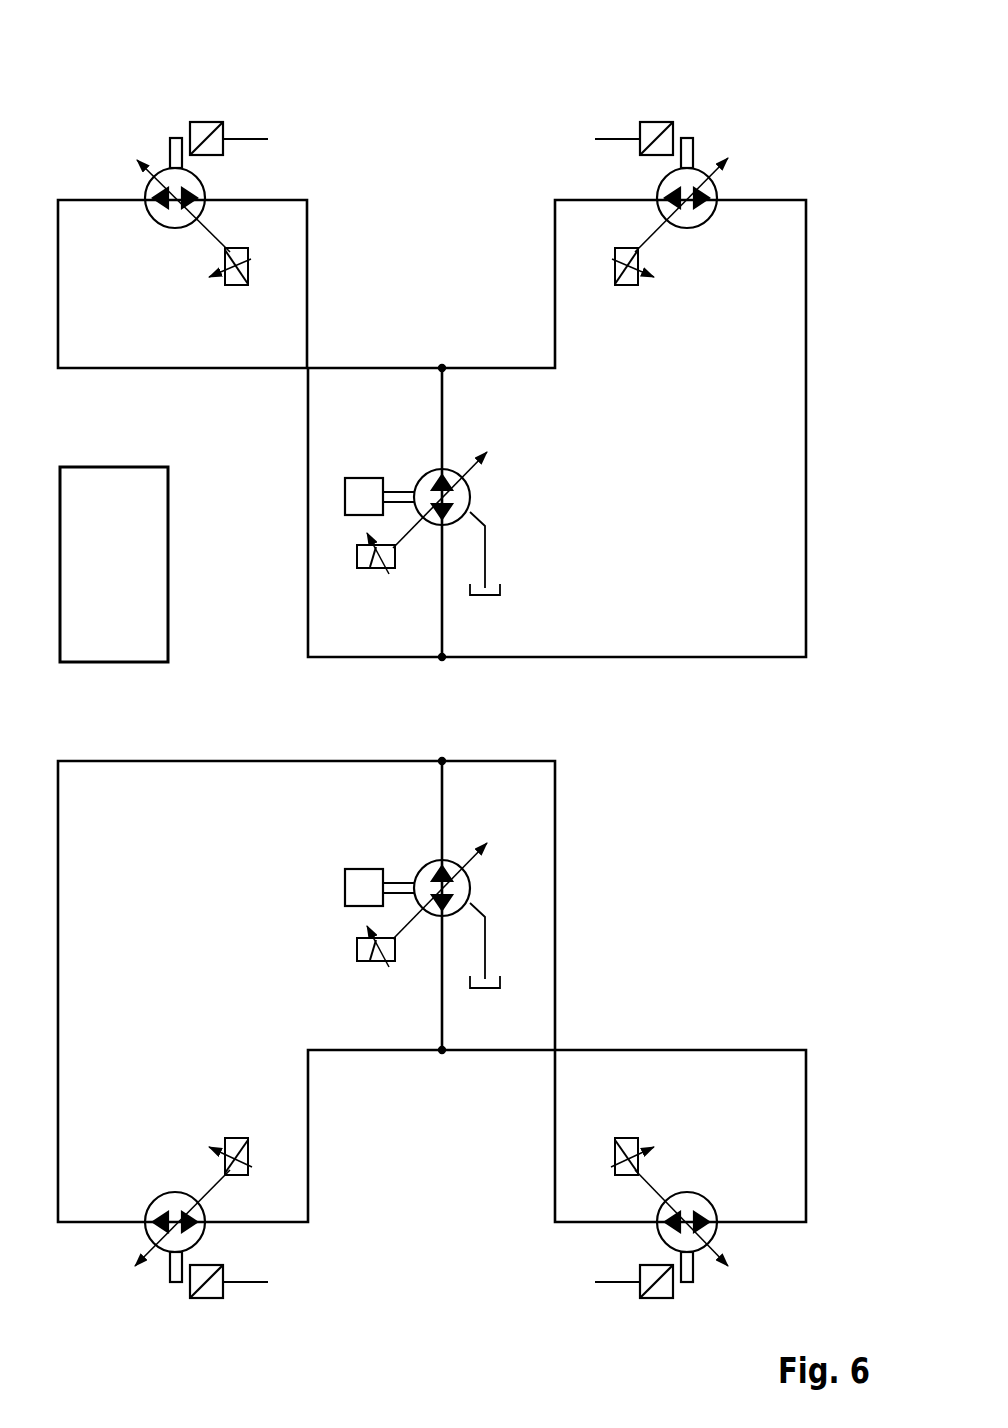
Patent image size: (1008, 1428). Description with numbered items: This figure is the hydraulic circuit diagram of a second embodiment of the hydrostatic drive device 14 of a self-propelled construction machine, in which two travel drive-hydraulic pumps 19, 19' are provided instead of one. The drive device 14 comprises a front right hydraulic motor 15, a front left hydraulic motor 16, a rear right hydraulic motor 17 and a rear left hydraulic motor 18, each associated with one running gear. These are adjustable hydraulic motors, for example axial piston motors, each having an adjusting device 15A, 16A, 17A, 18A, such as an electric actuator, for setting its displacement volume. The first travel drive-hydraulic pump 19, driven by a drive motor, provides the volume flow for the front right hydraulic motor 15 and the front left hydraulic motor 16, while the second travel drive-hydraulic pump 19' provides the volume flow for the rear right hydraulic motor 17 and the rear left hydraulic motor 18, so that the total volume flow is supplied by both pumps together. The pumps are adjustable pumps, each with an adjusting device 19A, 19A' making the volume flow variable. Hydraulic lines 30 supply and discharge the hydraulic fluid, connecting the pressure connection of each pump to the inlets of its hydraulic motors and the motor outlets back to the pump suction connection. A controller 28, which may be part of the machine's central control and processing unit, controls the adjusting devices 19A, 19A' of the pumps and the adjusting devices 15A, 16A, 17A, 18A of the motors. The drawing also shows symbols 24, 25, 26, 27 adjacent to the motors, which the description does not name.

The hydrostatic drive device 14 is at (427, 103).
The front right hydraulic motor 15 is at (697, 275).
The front left hydraulic motor 16 is at (172, 273).
The rear right hydraulic motor 17 is at (698, 1148).
The rear left hydraulic motor 18 is at (172, 1148).
The adjusting device 15A is at (625, 247).
The adjusting device 16A is at (237, 247).
The adjusting device 17A is at (625, 1176).
The adjusting device 18A is at (237, 1176).
The travel drive-hydraulic pump 19 is at (476, 523).
The second travel drive-hydraulic pump 19' is at (479, 915).
The adjusting device 19A is at (321, 555).
The adjusting device 19A' is at (317, 948).
The filter 24 is at (657, 120).
The filter 25 is at (207, 120).
The filter 26 is at (657, 1302).
The filter 27 is at (207, 1302).
The controller 28 is at (116, 466).
The hydraulic lines 30 is at (445, 322).